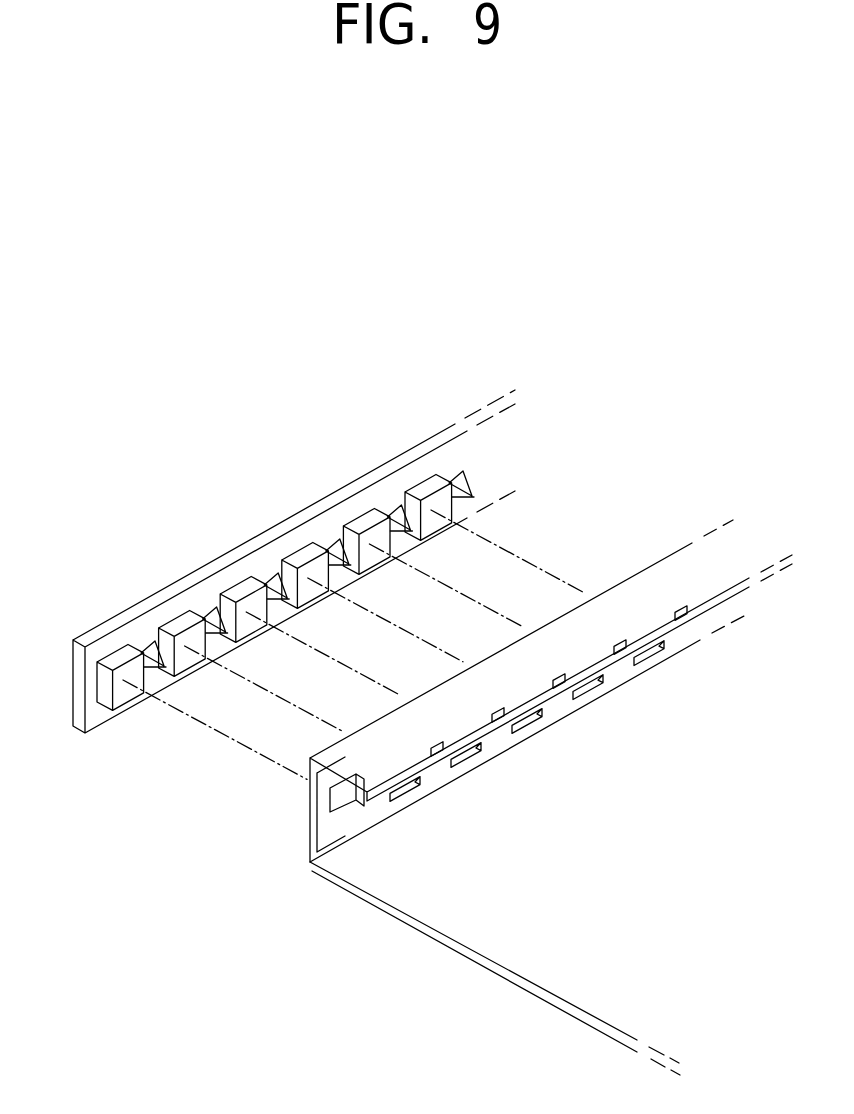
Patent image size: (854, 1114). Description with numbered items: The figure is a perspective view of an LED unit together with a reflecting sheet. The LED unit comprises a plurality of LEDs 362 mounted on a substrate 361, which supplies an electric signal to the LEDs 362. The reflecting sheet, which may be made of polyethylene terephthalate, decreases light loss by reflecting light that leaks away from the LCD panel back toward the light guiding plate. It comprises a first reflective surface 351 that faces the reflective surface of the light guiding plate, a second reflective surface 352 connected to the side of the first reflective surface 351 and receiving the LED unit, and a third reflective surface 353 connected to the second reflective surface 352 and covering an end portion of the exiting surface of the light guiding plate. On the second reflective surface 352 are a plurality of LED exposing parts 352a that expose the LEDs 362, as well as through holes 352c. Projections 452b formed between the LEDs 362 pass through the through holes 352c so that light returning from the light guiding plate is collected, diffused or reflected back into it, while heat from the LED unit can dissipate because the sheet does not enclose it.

The first reflective surface 351 is at (497, 975).
The second reflective surface 352 is at (311, 863).
The LED exposing parts 352a is at (409, 792).
The through holes 352c is at (673, 608).
The third reflective surface 353 is at (316, 787).
The substrate 361 is at (277, 532).
The LEDs 362 is at (172, 622).
The projections 452b is at (456, 478).